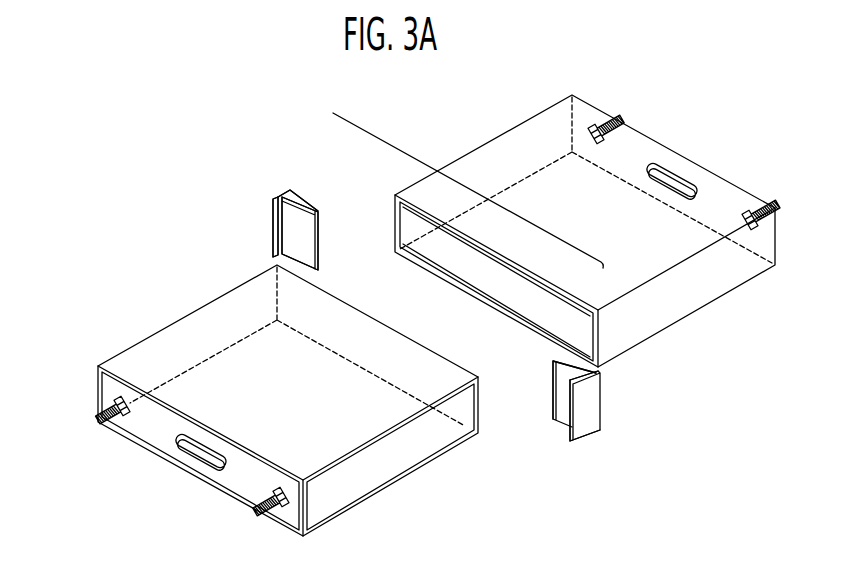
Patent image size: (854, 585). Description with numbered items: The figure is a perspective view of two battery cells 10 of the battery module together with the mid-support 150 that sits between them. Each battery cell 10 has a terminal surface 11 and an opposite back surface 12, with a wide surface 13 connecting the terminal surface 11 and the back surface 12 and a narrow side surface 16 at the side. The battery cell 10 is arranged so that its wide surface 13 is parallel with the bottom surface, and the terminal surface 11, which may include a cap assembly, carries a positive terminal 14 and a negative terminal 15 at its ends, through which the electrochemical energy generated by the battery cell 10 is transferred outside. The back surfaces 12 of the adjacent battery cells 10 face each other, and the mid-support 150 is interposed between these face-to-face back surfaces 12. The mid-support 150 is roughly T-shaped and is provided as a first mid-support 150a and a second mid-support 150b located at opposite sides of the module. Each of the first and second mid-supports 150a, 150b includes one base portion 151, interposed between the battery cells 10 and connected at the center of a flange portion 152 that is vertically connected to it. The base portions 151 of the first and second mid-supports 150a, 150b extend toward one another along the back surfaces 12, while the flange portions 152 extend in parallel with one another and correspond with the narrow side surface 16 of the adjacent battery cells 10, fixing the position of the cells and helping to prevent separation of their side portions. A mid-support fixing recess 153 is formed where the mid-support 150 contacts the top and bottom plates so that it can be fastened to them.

The battery cell 10 is at (423, 297).
The terminal surface 11 is at (147, 435).
The back surface 12 is at (473, 282).
The wide surface 13 is at (365, 415).
The positive terminal 14 is at (95, 420).
The negative terminal 15 is at (618, 115).
The narrow side surface 16 is at (367, 482).
The mid-support 150 is at (410, 295).
The first mid-support 150a is at (578, 367).
The second mid-support 150b is at (313, 200).
The base portion 151 is at (308, 243).
The flange portion 152 is at (270, 226).
The mid-support fixing recess 153 is at (303, 192).